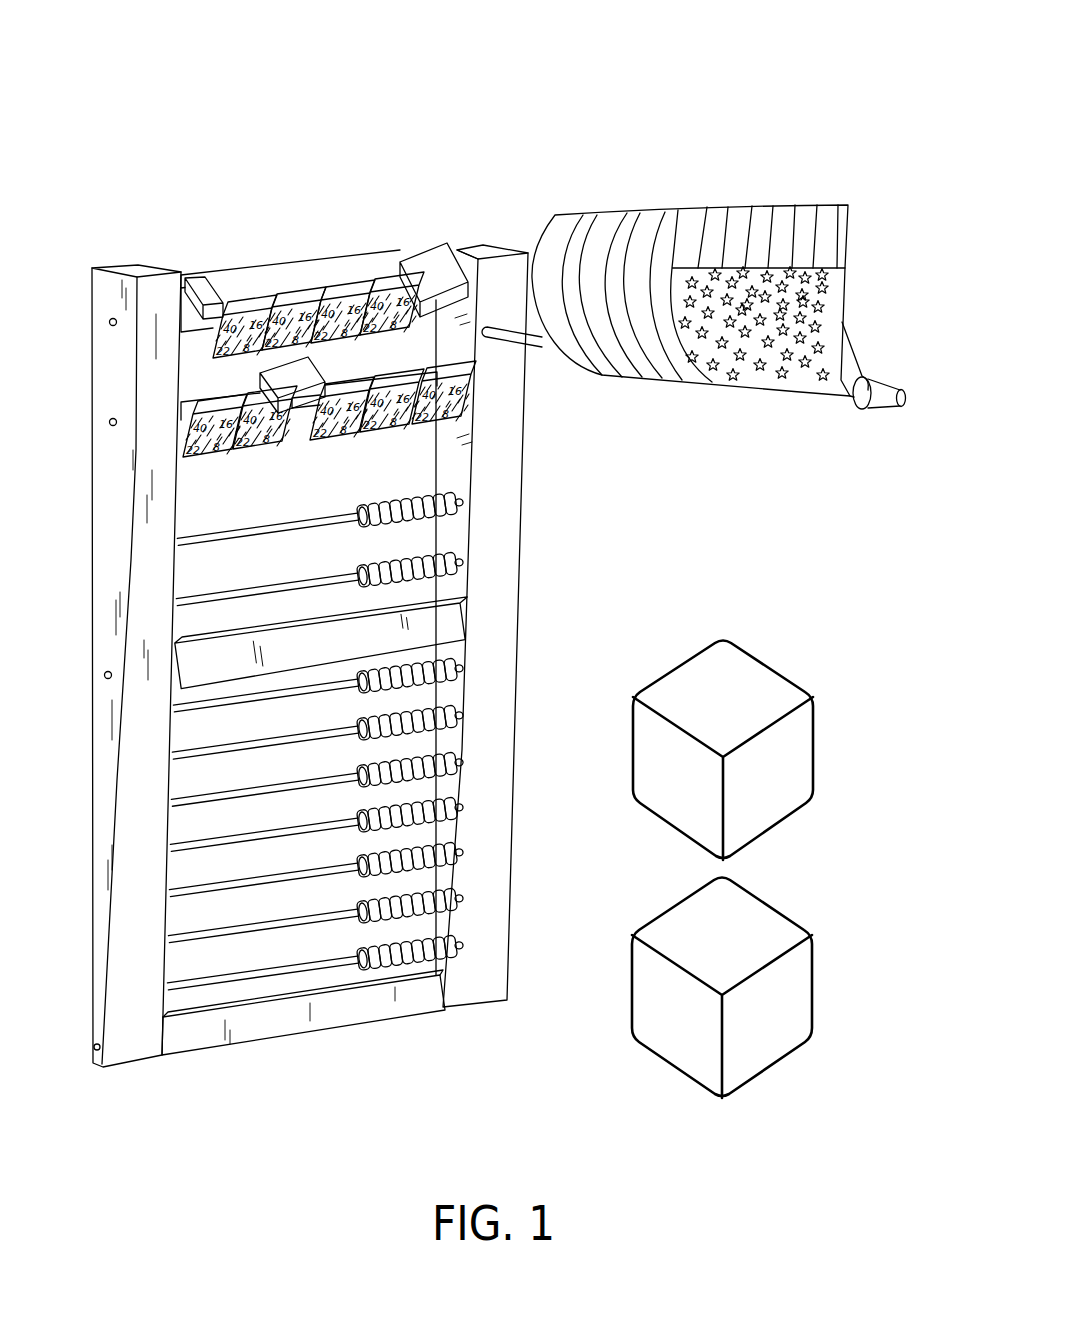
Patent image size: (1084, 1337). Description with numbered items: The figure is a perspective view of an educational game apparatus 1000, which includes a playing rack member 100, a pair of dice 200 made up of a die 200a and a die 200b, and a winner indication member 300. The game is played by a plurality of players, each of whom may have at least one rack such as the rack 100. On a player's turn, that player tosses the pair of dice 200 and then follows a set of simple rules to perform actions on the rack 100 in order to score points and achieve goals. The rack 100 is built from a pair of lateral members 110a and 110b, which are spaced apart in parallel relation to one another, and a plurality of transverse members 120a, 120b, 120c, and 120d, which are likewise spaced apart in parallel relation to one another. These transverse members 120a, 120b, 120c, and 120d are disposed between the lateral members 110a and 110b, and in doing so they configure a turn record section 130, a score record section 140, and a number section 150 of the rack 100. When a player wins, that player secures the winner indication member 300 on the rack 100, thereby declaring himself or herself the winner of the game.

The educational game apparatus 1000 is at (725, 72).
The playing rack member 100 is at (133, 248).
The lateral member 110a is at (522, 430).
The lateral member 110b is at (168, 530).
The transverse member 120a is at (287, 1023).
The transverse member 120b is at (398, 622).
The transverse member 120c is at (278, 425).
The transverse member 120d is at (420, 305).
The turn record section 130 is at (556, 533).
The score record section 140 is at (540, 790).
The number section 150 is at (335, 240).
The pair of dice 200 is at (778, 615).
The die 200a is at (772, 813).
The die 200b is at (757, 1060).
The winner indication member 300 is at (758, 184).